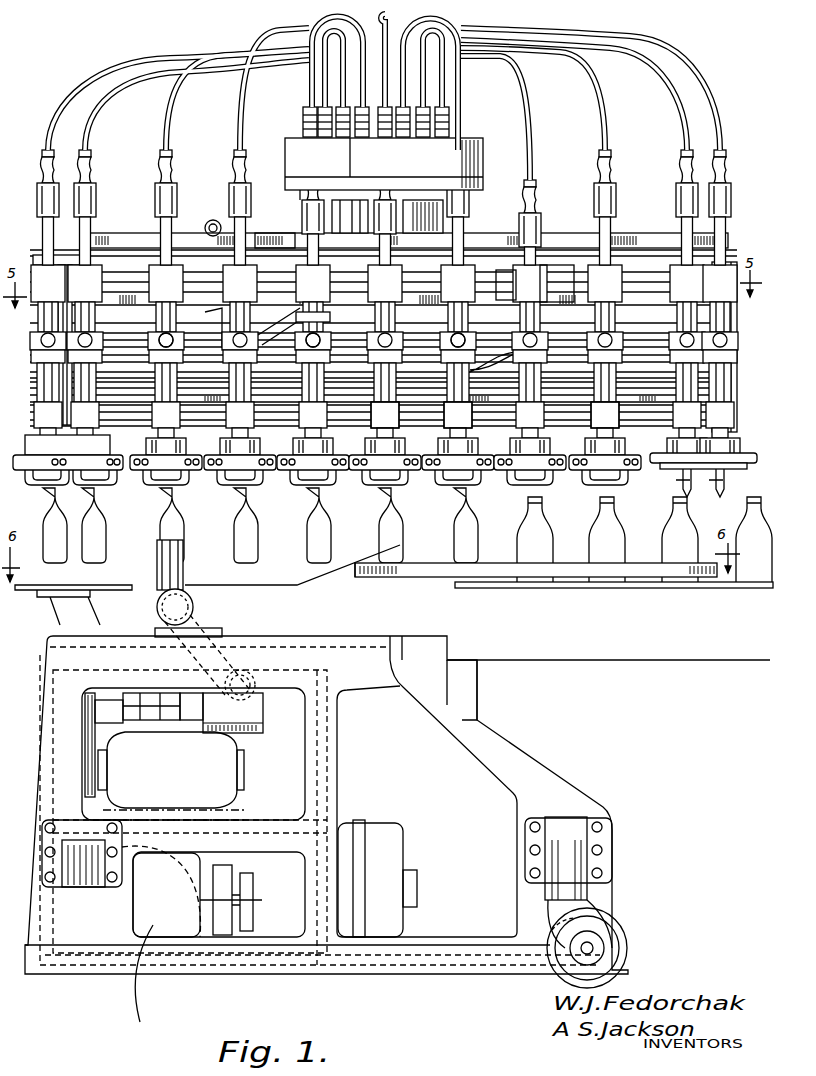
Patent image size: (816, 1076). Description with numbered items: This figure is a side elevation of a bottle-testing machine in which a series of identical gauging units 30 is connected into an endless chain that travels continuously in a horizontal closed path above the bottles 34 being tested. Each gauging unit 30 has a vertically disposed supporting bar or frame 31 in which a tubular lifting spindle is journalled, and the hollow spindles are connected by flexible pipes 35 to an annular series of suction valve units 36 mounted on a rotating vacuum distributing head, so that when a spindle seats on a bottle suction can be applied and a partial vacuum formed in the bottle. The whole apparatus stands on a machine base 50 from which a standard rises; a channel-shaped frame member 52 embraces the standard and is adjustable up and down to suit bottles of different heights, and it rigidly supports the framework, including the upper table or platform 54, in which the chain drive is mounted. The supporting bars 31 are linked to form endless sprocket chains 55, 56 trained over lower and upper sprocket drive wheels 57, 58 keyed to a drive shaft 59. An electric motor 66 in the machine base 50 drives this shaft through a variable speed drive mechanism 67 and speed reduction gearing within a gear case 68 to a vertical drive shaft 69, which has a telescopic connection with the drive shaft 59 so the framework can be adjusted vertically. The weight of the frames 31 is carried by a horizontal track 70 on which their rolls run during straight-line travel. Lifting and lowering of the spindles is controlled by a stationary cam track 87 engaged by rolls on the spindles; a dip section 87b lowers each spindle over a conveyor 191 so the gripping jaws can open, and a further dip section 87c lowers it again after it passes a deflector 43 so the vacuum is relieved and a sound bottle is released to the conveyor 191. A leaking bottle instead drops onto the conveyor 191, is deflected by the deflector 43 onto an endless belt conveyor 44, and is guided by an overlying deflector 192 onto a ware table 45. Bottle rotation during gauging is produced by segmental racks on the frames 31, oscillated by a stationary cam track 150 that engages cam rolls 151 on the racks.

The gauging unit 30 is at (36, 420).
The supporting bar or frame 31 is at (62, 372).
The bottle 34 is at (610, 543).
The flexible pipe 35 is at (118, 62).
The suction valve unit 36 is at (481, 138).
The deflector 43 is at (440, 578).
The endless belt conveyor 44 is at (578, 646).
The ware table 45 is at (592, 592).
The machine base 50 is at (328, 781).
The frame member 52 is at (468, 707).
The upper table or platform 54 is at (556, 283).
The sprocket chain 55 is at (438, 405).
The sprocket chain 56 is at (366, 306).
The lower sprocket drive wheel 57 is at (588, 395).
The upper sprocket drive wheel 58 is at (508, 283).
The drive shaft 59 is at (156, 580).
The electric motor 66 is at (390, 853).
The variable speed drive mechanism 67 is at (181, 881).
The gear case 68 is at (216, 780).
The vertical drive shaft 69 is at (163, 700).
The horizontal track 70 is at (356, 445).
The stationary track 87 is at (216, 350).
The dip section 87b is at (349, 370).
The dip section 87c is at (508, 373).
The cam track 150 is at (277, 243).
The cam roll 151 is at (676, 170).
The conveyor 191 is at (748, 582).
The deflector 192 is at (564, 562).